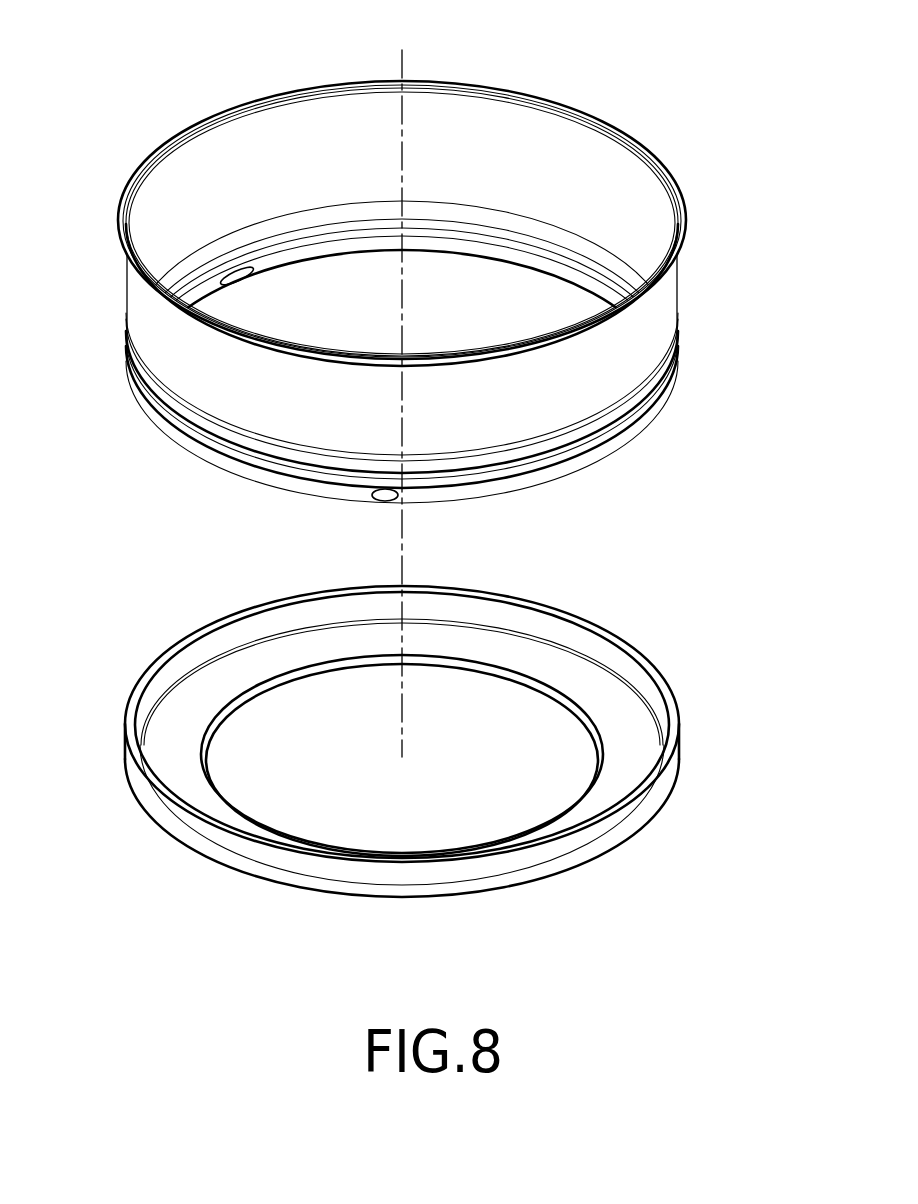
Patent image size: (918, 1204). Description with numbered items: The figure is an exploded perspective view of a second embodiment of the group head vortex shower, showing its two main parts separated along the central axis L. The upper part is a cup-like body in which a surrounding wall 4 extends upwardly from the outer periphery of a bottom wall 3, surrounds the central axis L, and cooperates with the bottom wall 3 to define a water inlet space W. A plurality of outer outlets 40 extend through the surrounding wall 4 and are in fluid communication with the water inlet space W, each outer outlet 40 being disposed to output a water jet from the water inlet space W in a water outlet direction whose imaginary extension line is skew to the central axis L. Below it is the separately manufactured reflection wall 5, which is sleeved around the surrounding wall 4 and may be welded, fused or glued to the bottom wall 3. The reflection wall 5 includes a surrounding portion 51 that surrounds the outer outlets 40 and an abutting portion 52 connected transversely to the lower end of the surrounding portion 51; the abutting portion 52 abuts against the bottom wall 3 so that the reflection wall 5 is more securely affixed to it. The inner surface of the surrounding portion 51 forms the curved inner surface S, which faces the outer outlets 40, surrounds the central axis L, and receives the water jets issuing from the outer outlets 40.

The bottom wall 3 is at (297, 273).
The surrounding wall 4 is at (137, 297).
The outer outlets 40 is at (223, 277).
The reflection wall 5 is at (457, 708).
The surrounding portion 51 is at (640, 805).
The abutting portion 52 is at (637, 734).
The curved inner surface S is at (570, 576).
The water inlet space W is at (440, 122).
The central axis L is at (403, 378).